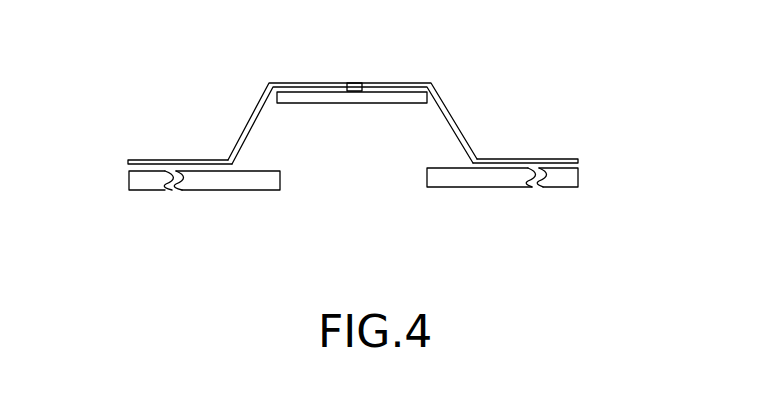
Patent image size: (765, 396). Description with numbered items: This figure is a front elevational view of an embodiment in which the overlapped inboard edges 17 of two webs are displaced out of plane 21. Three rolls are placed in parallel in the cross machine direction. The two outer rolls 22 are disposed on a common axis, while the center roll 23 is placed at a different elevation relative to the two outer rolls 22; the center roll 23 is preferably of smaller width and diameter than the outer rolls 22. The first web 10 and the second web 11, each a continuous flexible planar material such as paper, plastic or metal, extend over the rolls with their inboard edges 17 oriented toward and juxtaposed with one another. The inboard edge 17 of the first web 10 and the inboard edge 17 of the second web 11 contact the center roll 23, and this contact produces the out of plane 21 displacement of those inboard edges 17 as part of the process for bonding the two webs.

The first web 10 is at (165, 160).
The second web 11 is at (555, 159).
The inboard edge 17 is at (349, 85).
The out of plane displacement 21 is at (250, 125).
The outer rolls 22 is at (255, 180).
The center roll 23 is at (408, 98).